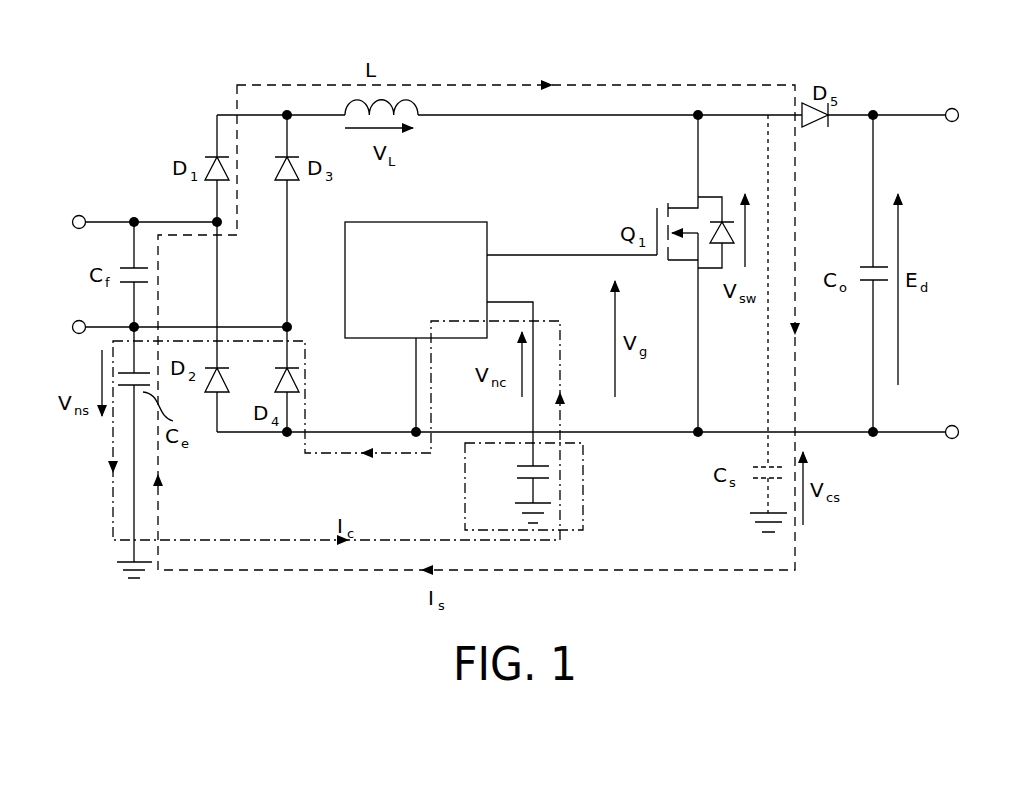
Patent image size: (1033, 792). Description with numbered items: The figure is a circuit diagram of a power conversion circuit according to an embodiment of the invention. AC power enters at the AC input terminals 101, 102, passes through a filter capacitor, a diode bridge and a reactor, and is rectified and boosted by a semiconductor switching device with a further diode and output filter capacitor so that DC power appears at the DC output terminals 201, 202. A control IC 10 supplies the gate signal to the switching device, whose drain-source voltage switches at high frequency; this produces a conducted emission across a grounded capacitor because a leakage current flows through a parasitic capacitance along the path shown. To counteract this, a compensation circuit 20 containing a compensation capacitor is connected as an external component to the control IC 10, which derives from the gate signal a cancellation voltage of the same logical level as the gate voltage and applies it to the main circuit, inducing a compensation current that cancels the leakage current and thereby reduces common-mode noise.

The control IC 10 is at (403, 242).
The compensation circuit 20 is at (582, 478).
The AC input terminal 101 is at (137, 209).
The AC input terminal 102 is at (172, 343).
The DC output terminal 201 is at (924, 102).
The DC output terminal 202 is at (924, 449).